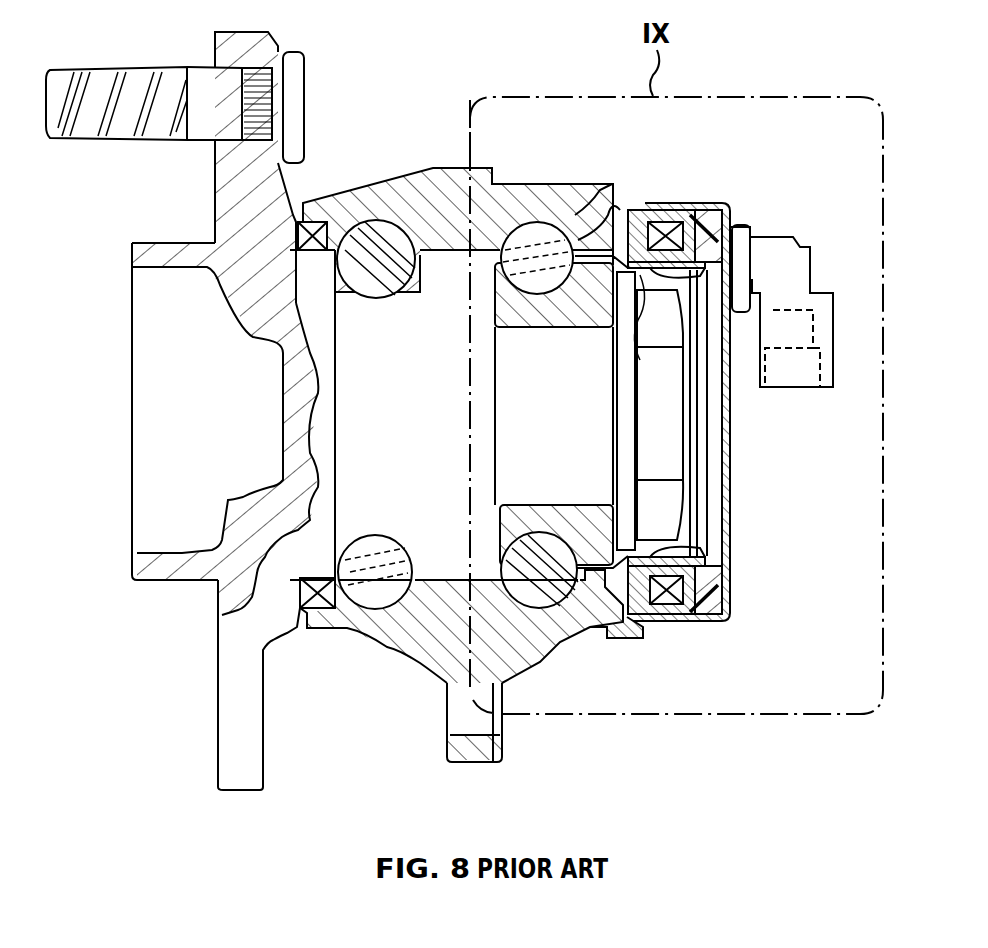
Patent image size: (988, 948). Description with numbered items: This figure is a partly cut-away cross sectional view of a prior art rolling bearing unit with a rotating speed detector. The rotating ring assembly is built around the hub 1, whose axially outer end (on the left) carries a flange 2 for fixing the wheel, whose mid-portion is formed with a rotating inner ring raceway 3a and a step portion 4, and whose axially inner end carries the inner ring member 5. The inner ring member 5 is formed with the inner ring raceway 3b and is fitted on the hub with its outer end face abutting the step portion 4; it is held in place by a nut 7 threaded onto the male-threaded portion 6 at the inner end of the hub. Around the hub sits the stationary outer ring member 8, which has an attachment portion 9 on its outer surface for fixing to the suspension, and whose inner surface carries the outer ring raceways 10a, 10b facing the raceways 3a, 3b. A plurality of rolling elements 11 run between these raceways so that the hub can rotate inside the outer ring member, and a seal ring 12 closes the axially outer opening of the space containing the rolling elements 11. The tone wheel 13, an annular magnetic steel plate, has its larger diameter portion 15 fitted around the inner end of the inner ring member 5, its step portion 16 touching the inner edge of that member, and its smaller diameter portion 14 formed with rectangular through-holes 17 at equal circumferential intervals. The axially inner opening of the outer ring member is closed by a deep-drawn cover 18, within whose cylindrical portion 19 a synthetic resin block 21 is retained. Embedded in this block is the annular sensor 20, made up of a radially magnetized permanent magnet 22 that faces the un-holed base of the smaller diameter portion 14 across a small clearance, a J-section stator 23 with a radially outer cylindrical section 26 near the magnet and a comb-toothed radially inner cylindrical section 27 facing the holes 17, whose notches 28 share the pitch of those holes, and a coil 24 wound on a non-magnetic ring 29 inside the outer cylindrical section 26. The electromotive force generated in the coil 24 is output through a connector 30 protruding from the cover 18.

The hub 1 is at (350, 428).
The flange 2 is at (220, 212).
The inner ring raceway 3a is at (358, 560).
The inner ring raceway 3b is at (507, 325).
The step portion 4 is at (500, 297).
The inner ring member 5 is at (573, 312).
The male-threaded portion 6 is at (615, 443).
The nut 7 is at (697, 413).
The outer ring member 8 is at (556, 212).
The attachment portion 9 is at (498, 750).
The outer ring raceway 10a is at (378, 605).
The outer ring raceway 10b is at (540, 600).
The rolling elements 11 is at (382, 232).
The seal ring 12 is at (308, 220).
The tone wheel 13 is at (692, 550).
The smaller diameter portion 14 is at (690, 528).
The larger diameter portion 15 is at (583, 633).
The step portion 16 is at (595, 218).
The through-holes 17 is at (728, 266).
The cover 18 is at (733, 480).
The cylindrical portion 19 is at (705, 208).
The sensor 20 is at (681, 625).
The synthetic resin mass or block 21 is at (730, 225).
The permanent magnet 22 is at (608, 215).
The stator 23 is at (716, 625).
The coil 24 is at (720, 212).
The radially outer cylindrical section 26 is at (662, 210).
The radially inner cylindrical section 27 is at (724, 585).
The notches 28 is at (658, 407).
The non-magnetic ring 29 is at (726, 608).
The connector 30 is at (800, 287).